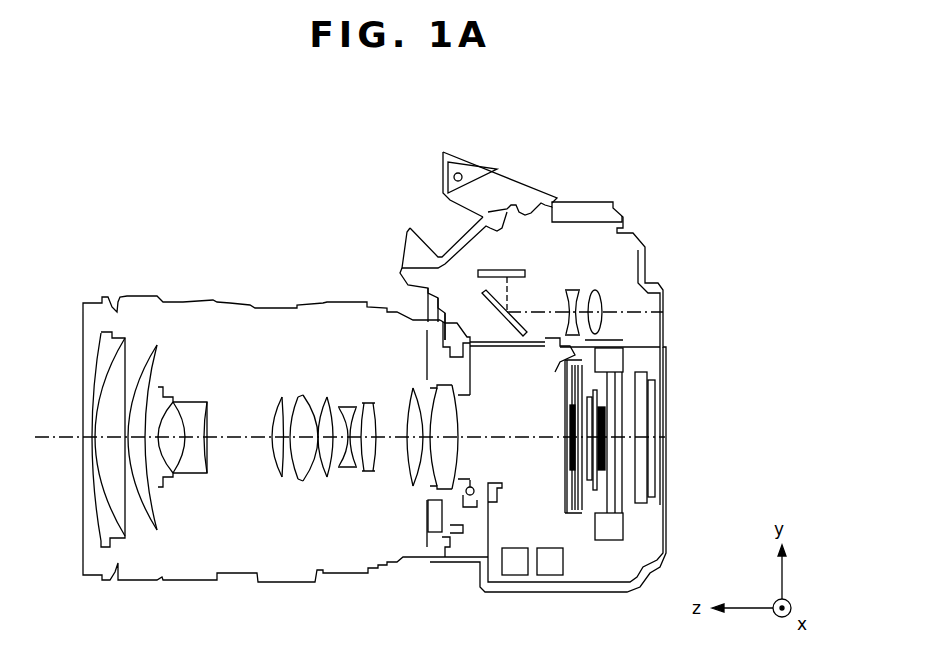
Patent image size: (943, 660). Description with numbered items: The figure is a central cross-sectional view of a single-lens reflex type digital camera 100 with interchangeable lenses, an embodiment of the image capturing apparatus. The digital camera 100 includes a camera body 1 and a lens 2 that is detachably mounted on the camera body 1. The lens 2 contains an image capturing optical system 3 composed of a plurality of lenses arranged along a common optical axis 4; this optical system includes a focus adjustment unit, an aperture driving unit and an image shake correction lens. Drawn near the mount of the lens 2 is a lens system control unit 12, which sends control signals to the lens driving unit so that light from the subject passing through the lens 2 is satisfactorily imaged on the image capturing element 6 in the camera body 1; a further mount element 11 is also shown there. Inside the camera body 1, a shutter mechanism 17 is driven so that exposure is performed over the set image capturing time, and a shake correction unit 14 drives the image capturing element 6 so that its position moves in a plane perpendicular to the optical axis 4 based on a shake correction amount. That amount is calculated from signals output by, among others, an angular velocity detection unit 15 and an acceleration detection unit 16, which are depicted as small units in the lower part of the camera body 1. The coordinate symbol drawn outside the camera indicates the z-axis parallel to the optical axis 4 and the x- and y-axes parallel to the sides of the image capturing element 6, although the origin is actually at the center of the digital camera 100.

The digital camera 100 is at (406, 153).
The camera body 1 is at (650, 241).
The lens 2 is at (216, 300).
The image capturing optical system 3 is at (216, 545).
The optical axis 4 is at (47, 445).
The image capturing element 6 is at (607, 460).
The lens contact 11 is at (445, 560).
The lens system control unit 12 is at (422, 517).
The shake correction unit 14 is at (612, 540).
The angular velocity detection unit 15 is at (508, 575).
The acceleration detection unit 16 is at (547, 575).
The shutter mechanism 17 is at (573, 512).